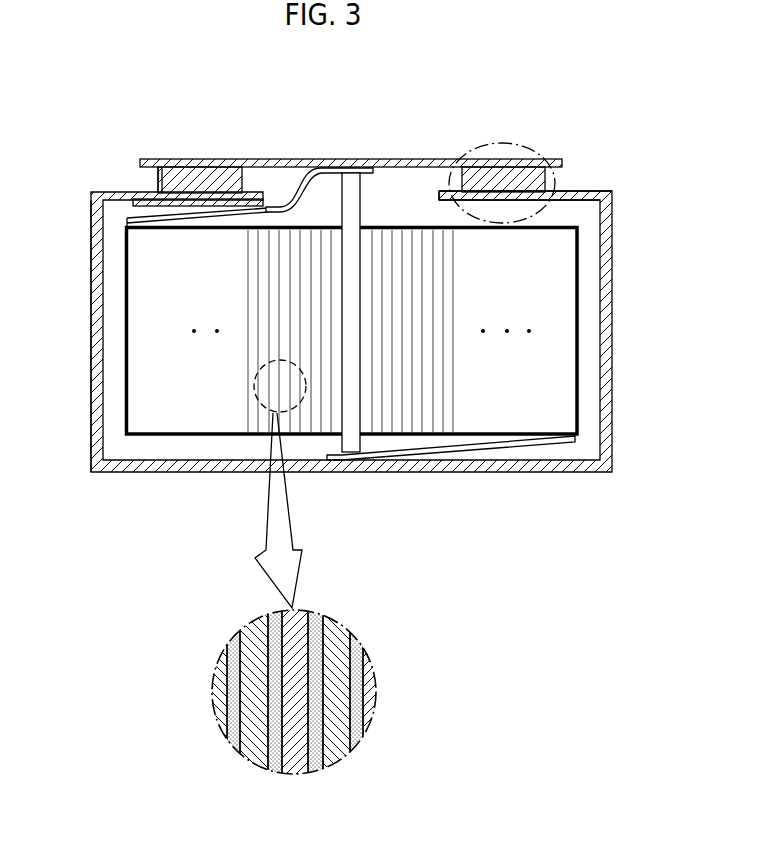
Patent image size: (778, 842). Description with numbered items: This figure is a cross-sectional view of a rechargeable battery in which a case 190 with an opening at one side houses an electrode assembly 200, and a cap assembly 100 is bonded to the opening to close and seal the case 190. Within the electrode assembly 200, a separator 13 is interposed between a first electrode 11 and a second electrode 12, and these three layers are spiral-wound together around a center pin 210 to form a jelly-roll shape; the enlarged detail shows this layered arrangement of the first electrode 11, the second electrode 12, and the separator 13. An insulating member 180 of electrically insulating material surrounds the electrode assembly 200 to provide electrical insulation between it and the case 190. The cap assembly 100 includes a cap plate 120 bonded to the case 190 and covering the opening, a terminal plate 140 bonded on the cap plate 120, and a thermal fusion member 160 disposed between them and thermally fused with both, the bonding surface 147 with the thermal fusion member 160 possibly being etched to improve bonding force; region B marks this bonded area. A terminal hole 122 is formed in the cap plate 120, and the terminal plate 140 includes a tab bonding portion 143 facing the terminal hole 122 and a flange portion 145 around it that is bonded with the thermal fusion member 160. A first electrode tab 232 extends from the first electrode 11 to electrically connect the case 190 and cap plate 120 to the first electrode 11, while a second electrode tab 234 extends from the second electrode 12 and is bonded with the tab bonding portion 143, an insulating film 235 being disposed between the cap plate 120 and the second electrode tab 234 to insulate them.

The cap assembly 100 is at (136, 149).
The cap plate 120 is at (601, 192).
The terminal hole 122 is at (440, 192).
The terminal plate 140 is at (566, 159).
The tab bonding portion 143 is at (352, 167).
The flange portion 145 is at (495, 182).
The bonding surface 147 is at (202, 193).
The thermal fusion member 160 is at (160, 180).
The insulating member 180 is at (125, 385).
The case 190 is at (92, 300).
The electrode assembly 200 is at (213, 415).
The center pin 210 is at (343, 412).
The first electrode tab 232 is at (505, 445).
The second electrode tab 234 is at (142, 220).
The insulating film 235 is at (250, 202).
The enlarged region B is at (520, 143).
The first electrode 11 is at (250, 700).
The second electrode 12 is at (297, 720).
The separator 13 is at (277, 765).